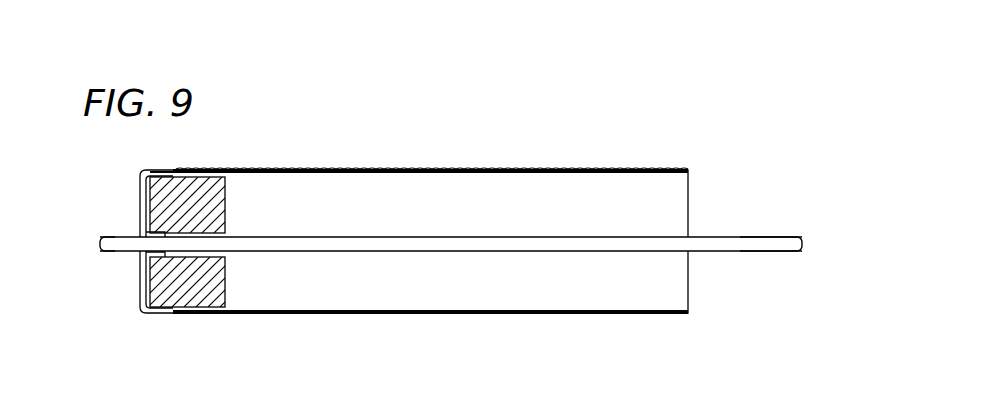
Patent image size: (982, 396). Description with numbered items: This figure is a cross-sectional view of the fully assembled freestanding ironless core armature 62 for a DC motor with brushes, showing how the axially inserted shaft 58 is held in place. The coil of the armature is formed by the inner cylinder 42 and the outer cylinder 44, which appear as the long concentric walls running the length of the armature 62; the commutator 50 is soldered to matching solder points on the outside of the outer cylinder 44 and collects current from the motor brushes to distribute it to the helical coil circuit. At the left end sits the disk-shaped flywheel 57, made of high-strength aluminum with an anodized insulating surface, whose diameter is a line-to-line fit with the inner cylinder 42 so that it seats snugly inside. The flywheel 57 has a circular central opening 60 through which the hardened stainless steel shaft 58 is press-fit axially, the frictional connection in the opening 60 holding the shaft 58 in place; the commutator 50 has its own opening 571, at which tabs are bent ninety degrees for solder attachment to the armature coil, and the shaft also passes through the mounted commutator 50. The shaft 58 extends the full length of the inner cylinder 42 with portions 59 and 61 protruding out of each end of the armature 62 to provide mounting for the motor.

The inner cylinder 42 is at (647, 175).
The outer cylinder 44 is at (523, 172).
The commutator 50 is at (140, 195).
The flywheel 57 is at (222, 286).
The opening 571 is at (148, 233).
The shaft 58 is at (372, 238).
The protruding portion of shaft 59 is at (730, 252).
The circular central opening 60 is at (193, 172).
The protruding portion of shaft 61 is at (105, 255).
The armature 62 is at (398, 135).